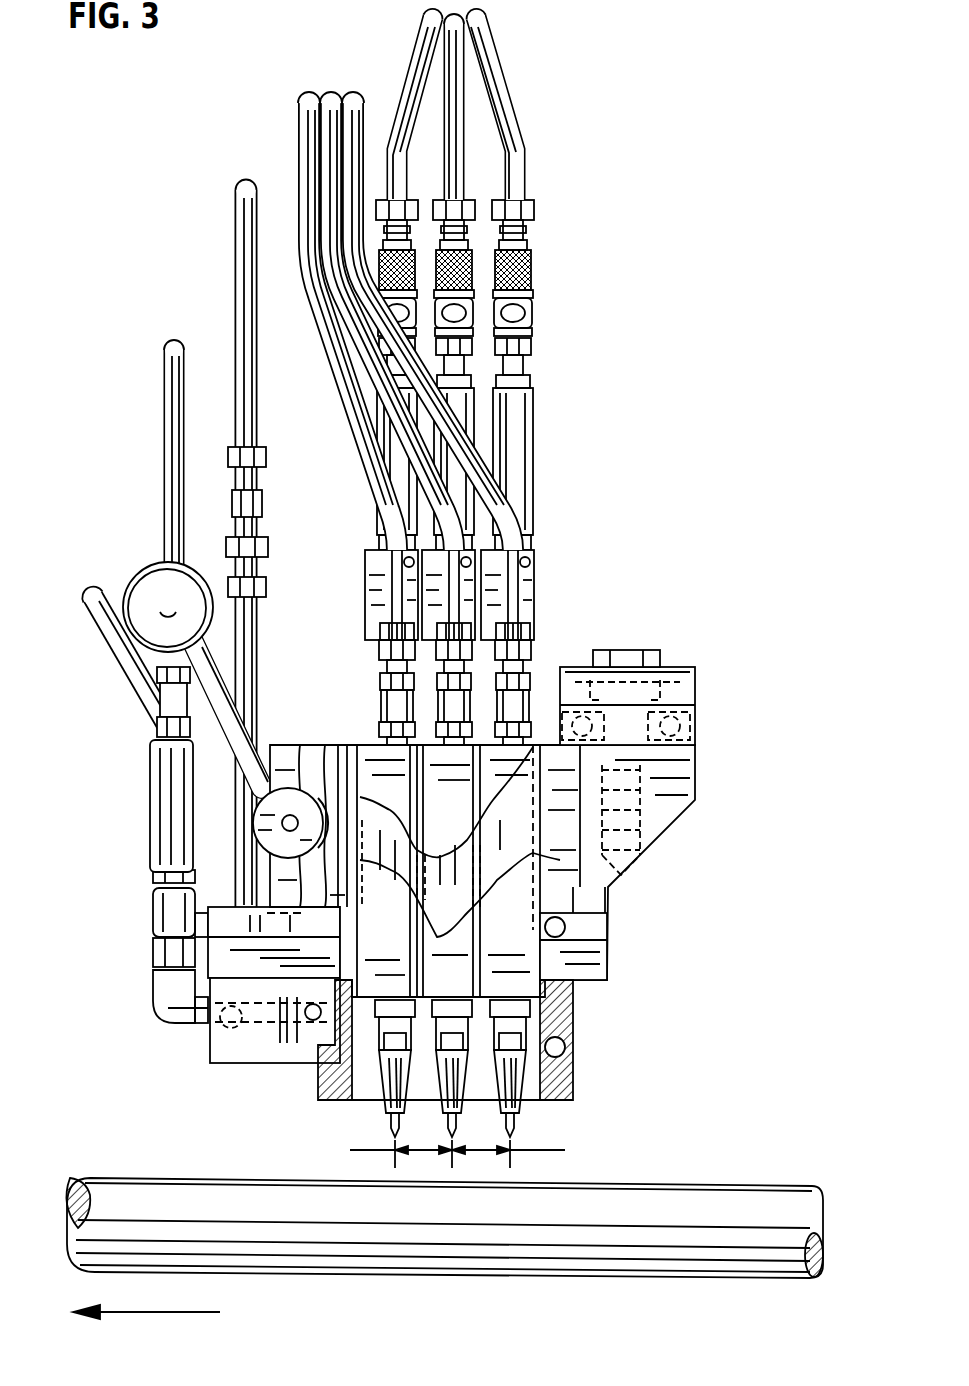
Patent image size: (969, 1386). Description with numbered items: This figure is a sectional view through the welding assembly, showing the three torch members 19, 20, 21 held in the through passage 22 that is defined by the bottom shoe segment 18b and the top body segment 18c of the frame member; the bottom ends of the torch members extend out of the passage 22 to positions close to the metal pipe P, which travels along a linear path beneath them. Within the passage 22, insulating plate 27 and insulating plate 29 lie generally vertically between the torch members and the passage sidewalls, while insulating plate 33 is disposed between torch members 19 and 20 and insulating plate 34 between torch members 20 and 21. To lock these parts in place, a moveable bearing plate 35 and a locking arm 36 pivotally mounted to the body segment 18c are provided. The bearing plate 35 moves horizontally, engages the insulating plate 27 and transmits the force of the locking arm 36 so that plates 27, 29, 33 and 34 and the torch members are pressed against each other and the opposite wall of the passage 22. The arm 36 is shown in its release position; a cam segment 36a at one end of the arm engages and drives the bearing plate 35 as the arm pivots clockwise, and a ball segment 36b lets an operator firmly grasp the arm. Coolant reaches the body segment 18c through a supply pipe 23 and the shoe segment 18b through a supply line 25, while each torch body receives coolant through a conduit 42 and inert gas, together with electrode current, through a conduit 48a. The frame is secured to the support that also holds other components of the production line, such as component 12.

The conduit 48a is at (413, 110).
The conduit 42 is at (455, 508).
The supply line 25 is at (253, 417).
The ball segment 36b is at (135, 578).
The locking arm 36 is at (223, 661).
The cam segment 36a is at (313, 775).
The bearing plate 35 is at (340, 753).
The supply pipe 23 is at (160, 816).
The production line component 12 is at (288, 765).
The insulating plate 29 is at (535, 703).
The insulating plate 33 is at (515, 860).
The insulating plate 34 is at (560, 860).
The insulating plate 27 is at (607, 890).
The top body segment 18c is at (608, 955).
The torch member 21 is at (540, 957).
The torch member 19 is at (540, 967).
The torch member 20 is at (540, 975).
The bottom shoe segment 18b is at (573, 1047).
The through passage 22 is at (340, 1098).
The metal pipe P is at (588, 1262).